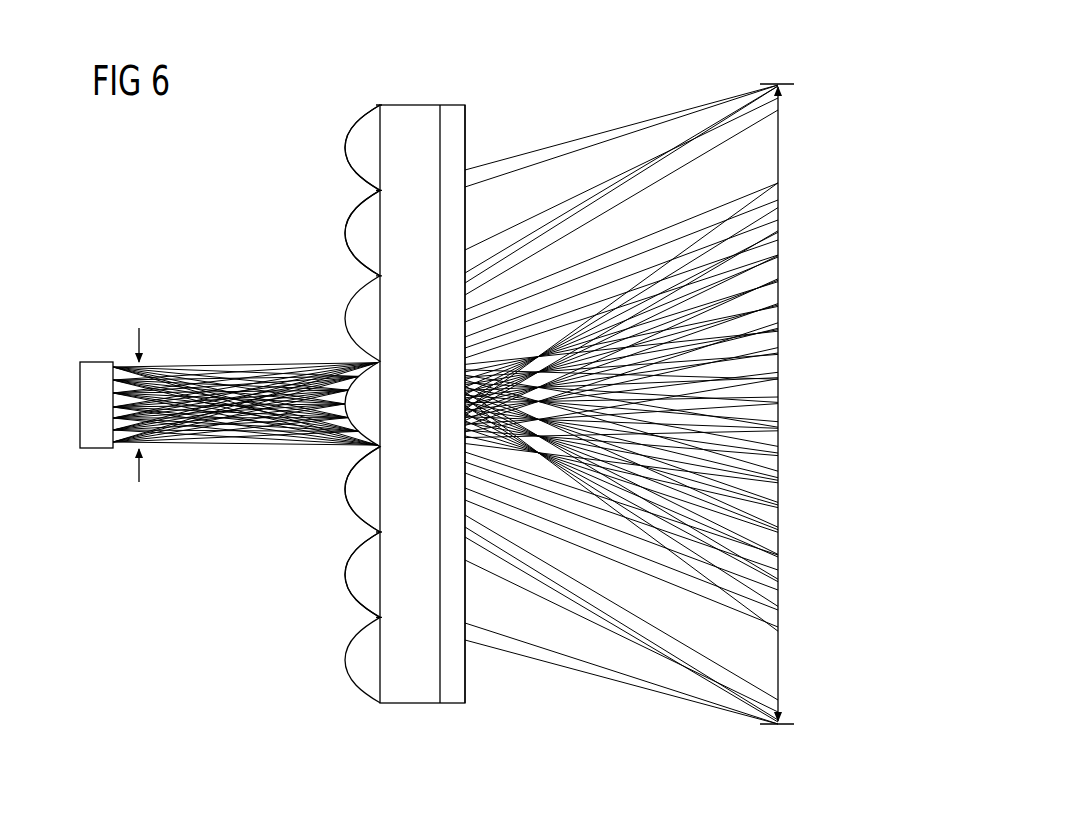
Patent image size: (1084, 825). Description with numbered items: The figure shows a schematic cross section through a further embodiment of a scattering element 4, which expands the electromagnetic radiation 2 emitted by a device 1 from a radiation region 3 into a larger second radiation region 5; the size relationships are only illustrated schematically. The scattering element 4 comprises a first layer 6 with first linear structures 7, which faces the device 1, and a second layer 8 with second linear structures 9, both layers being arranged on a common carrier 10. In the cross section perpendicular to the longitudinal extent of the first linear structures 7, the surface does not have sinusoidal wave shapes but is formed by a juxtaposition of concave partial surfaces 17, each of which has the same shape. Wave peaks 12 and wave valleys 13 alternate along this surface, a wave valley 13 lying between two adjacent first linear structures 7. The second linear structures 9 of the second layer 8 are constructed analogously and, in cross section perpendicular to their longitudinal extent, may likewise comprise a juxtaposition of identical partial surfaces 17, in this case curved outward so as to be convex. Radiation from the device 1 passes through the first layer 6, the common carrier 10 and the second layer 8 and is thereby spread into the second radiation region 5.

The device 1 is at (88, 395).
The electromagnetic radiation 2 is at (197, 385).
The radiation region 3 is at (183, 380).
The scattering element 4 is at (372, 103).
The second radiation region 5 is at (737, 418).
The first layer 6 is at (333, 140).
The first linear structures 7 is at (360, 155).
The second layer 8 is at (478, 135).
The second linear structures 9 is at (455, 108).
The common carrier 10 is at (415, 108).
The wave peaks 12 is at (345, 490).
The wave valleys 13 is at (380, 532).
The partial surfaces 17 is at (375, 108).